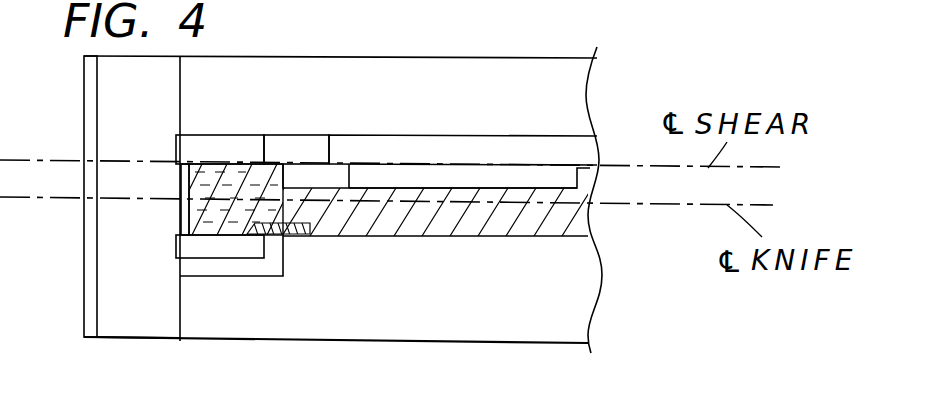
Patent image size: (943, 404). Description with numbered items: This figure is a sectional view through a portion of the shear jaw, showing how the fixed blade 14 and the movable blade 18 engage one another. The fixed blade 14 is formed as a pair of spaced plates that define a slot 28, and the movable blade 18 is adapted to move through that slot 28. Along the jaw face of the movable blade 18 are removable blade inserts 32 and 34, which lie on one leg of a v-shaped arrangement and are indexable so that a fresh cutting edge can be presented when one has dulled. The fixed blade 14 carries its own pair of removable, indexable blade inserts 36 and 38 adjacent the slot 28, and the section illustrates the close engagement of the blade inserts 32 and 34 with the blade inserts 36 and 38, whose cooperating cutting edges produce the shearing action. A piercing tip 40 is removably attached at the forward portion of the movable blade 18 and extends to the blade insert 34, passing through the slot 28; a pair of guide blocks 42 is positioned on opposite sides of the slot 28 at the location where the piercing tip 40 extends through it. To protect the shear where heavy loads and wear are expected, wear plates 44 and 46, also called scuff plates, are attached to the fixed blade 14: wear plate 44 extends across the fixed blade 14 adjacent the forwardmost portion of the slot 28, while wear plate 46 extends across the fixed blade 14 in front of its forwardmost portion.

The fixed blade 14 is at (477, 78).
The movable blade 18 is at (573, 215).
The slot 28 is at (178, 183).
The blade insert 32 is at (518, 180).
The blade insert 34 is at (333, 176).
The blade insert 36 is at (530, 156).
The blade insert 38 is at (295, 144).
The piercing tip 40 is at (200, 213).
The guide blocks 42 is at (218, 147).
The wear plate 44 is at (130, 311).
The wear plate 46 is at (88, 277).